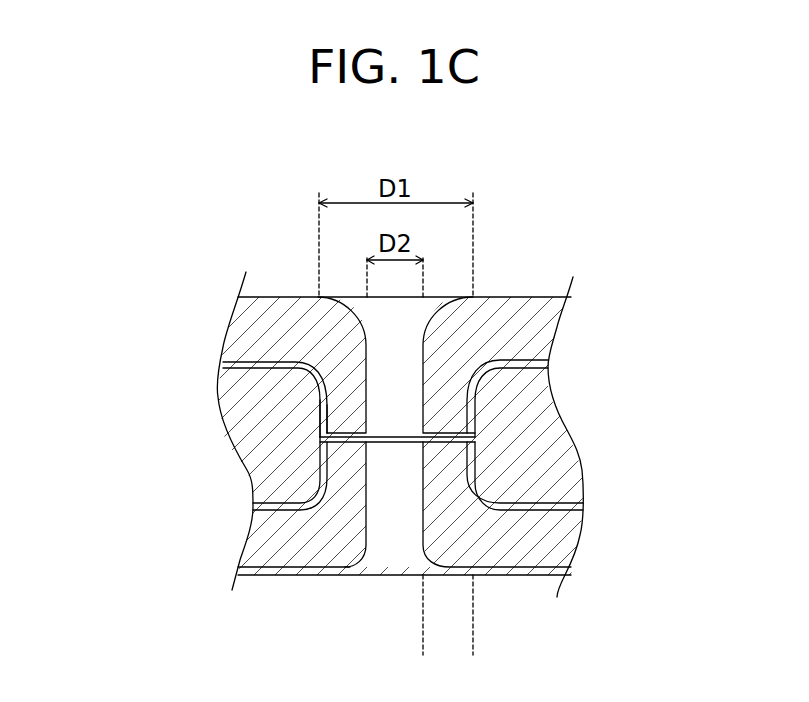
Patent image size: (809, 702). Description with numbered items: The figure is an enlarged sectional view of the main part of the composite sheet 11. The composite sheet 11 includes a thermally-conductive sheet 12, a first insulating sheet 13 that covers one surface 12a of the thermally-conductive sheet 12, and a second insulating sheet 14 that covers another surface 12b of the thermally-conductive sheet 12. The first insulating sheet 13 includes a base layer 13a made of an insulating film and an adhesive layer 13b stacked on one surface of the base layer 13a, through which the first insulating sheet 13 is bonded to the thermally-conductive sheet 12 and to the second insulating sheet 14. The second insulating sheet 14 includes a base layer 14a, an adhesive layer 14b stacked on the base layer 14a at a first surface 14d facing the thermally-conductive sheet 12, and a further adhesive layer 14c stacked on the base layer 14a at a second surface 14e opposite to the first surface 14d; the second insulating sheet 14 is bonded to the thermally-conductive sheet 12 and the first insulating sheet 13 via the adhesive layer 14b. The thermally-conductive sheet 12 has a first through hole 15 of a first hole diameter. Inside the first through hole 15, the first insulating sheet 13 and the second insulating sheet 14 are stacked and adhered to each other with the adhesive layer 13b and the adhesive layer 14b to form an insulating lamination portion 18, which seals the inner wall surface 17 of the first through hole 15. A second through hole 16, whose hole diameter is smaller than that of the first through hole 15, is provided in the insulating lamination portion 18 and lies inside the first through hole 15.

The composite sheet 11 is at (577, 230).
The thermally-conductive sheet 12 is at (216, 445).
The one surface of thermally-conductive sheet 12a is at (226, 362).
The another surface of thermally-conductive sheet 12b is at (250, 525).
The first insulating sheet 13 is at (542, 358).
The base layer 13a is at (547, 318).
The adhesive layer 13b is at (543, 365).
The second insulating sheet 14 is at (518, 550).
The base layer 14a is at (565, 540).
The adhesive layer 14b is at (583, 505).
The adhesive layer 14c is at (568, 570).
The first surface 14d is at (583, 487).
The second surface 14e is at (485, 615).
The first through hole 15 is at (320, 480).
The second through hole 16 is at (366, 482).
The inner wall surface 17 is at (322, 413).
The insulating lamination portion 18 is at (465, 644).